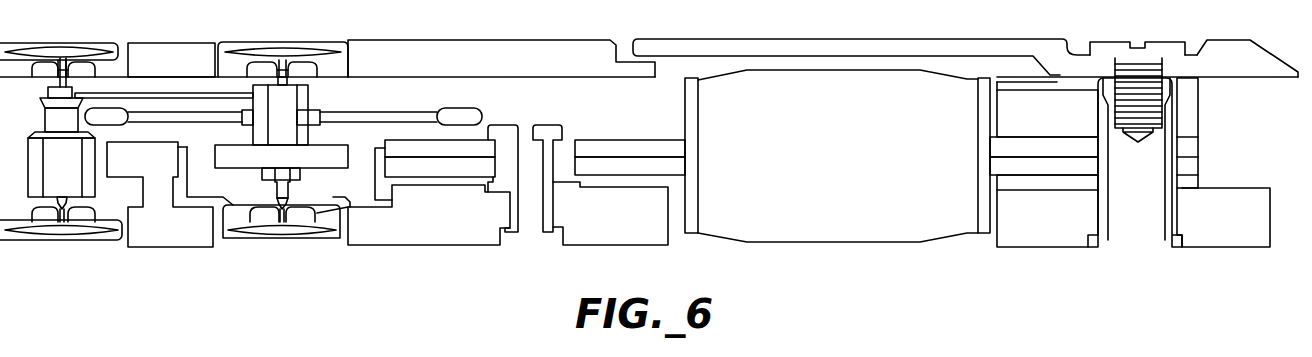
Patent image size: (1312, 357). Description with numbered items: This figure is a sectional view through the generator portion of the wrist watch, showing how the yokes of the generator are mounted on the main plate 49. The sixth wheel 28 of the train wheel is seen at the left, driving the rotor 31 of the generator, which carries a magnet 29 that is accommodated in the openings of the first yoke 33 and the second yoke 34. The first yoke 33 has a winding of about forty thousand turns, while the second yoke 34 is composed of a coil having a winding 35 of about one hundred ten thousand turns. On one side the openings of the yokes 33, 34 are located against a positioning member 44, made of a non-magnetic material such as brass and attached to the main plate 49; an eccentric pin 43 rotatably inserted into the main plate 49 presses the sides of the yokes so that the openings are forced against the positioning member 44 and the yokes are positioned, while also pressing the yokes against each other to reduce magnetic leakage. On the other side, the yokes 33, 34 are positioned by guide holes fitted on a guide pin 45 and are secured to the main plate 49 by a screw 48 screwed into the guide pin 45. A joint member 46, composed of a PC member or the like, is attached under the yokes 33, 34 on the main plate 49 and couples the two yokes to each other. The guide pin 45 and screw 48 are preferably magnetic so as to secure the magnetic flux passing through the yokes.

The sixth wheel 28 is at (120, 95).
The rotor 31 is at (172, 112).
The magnet 29 is at (230, 160).
The second yoke 34 is at (400, 147).
The first yoke 33 is at (430, 165).
The eccentric pin 43 is at (503, 130).
The positioning member 44 is at (338, 213).
The main plate 49 is at (415, 235).
The winding 35 is at (808, 233).
The joint member 46 is at (1033, 182).
The guide pin 45 is at (1132, 233).
The screw 48 is at (1163, 48).